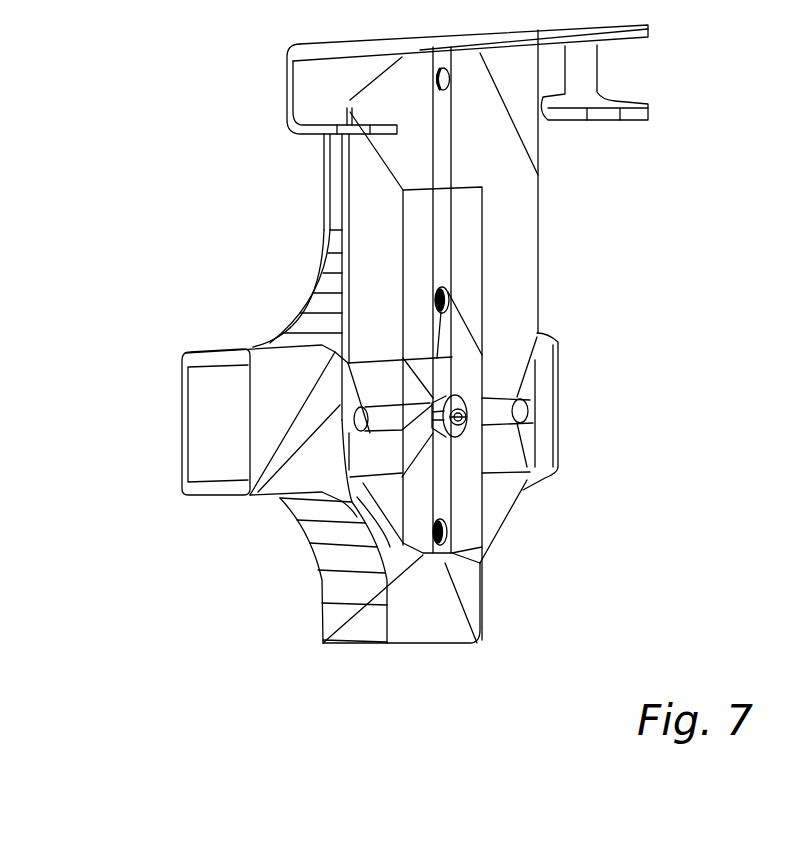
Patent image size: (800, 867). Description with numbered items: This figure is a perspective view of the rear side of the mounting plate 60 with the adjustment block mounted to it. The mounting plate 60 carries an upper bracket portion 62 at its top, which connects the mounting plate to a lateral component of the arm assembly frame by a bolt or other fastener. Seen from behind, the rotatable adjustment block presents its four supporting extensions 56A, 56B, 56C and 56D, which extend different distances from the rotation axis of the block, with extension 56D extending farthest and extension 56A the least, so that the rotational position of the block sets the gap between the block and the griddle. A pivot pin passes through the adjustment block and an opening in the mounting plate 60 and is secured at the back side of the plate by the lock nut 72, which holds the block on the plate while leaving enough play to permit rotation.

The upper bracket portion 62 is at (292, 92).
The mounting plate 60 is at (507, 232).
The supporting extension 56D is at (337, 188).
The supporting extension 56C is at (205, 357).
The supporting extension 56A is at (550, 417).
The supporting extension 56B is at (460, 615).
The lock nut 72 is at (453, 400).